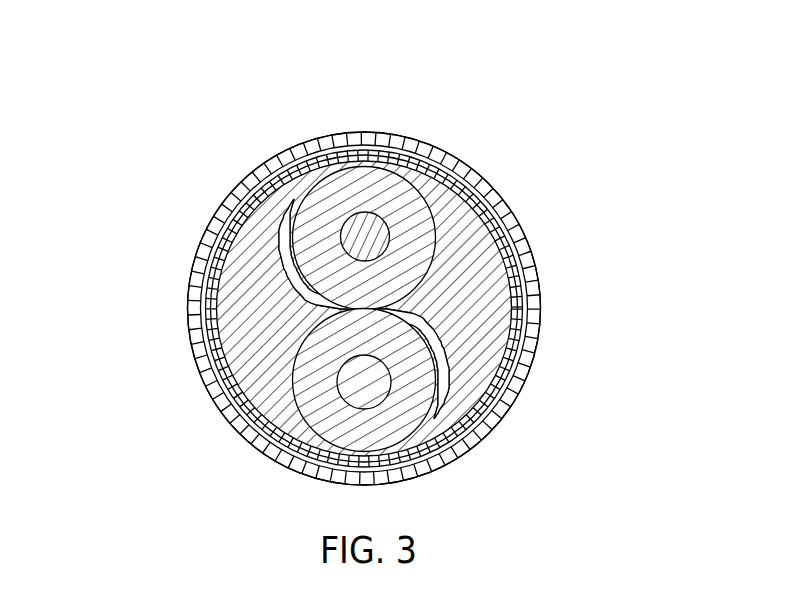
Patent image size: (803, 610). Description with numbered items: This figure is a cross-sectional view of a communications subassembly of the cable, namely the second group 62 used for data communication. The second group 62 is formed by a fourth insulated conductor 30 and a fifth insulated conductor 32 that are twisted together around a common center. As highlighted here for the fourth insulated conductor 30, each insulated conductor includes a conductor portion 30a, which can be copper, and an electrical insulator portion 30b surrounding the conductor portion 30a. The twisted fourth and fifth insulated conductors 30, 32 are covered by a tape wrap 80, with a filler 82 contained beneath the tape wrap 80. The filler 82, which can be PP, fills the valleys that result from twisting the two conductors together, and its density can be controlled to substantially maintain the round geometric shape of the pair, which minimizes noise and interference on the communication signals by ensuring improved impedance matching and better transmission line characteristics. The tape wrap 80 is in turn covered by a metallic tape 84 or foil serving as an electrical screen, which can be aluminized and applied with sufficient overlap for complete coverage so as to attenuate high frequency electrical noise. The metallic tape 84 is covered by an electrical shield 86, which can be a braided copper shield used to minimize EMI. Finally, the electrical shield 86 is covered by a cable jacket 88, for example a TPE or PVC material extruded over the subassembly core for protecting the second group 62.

The second group 62 is at (230, 140).
The fourth insulated conductor 30 is at (356, 244).
The fifth insulated conductor 32 is at (370, 383).
The conductor portion 30a is at (376, 206).
The electrical insulator portion 30b is at (415, 245).
The filler 82 is at (481, 260).
The tape wrap 80 is at (539, 291).
The metallic tape 84 is at (535, 348).
The electrical shield 86 is at (516, 405).
The cable jacket 88 is at (440, 469).